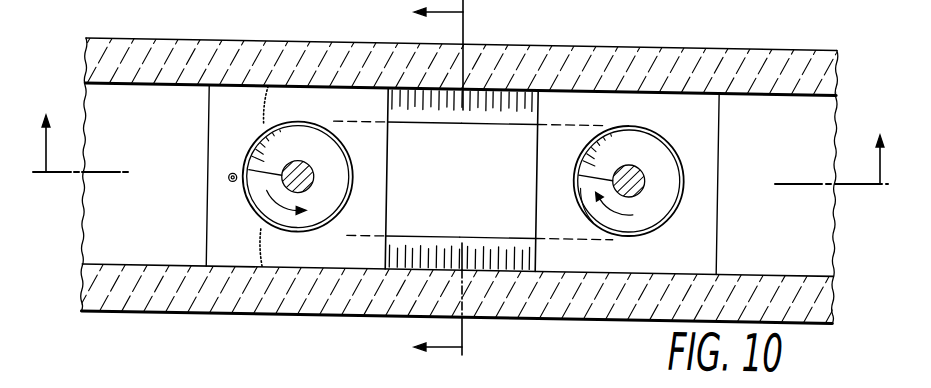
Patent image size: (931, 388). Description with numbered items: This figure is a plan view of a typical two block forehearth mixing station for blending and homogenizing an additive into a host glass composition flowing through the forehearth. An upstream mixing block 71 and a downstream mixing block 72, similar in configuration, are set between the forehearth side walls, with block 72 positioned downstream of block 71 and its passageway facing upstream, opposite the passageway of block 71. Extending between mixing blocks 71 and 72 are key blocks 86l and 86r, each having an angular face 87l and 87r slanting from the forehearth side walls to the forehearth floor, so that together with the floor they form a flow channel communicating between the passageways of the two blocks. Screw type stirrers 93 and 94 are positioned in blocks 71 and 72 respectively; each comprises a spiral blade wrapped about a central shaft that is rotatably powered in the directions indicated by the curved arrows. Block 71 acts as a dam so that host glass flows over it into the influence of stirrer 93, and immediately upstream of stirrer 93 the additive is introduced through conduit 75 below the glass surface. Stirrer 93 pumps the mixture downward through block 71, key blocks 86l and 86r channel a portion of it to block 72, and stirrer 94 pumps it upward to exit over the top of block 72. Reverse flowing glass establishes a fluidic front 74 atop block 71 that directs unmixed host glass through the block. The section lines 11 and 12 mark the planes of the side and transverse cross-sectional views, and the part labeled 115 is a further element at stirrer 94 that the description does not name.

The section line 11- 11 is at (459, 126).
The section line 12- 12 is at (416, 183).
The upstream mixing block 71 is at (210, 232).
The downstream mixing block 72 is at (720, 214).
The fluidic front 74 is at (266, 101).
The conduit 75 is at (231, 174).
The left key block 86l is at (424, 118).
The angular face of left key block 87l is at (498, 104).
The right key block 86r is at (438, 208).
The angular face of right key block 87r is at (500, 256).
The screw type stirrer 93 is at (304, 134).
The screw type stirrer 94 is at (634, 134).
The wheel support 115 is at (586, 206).